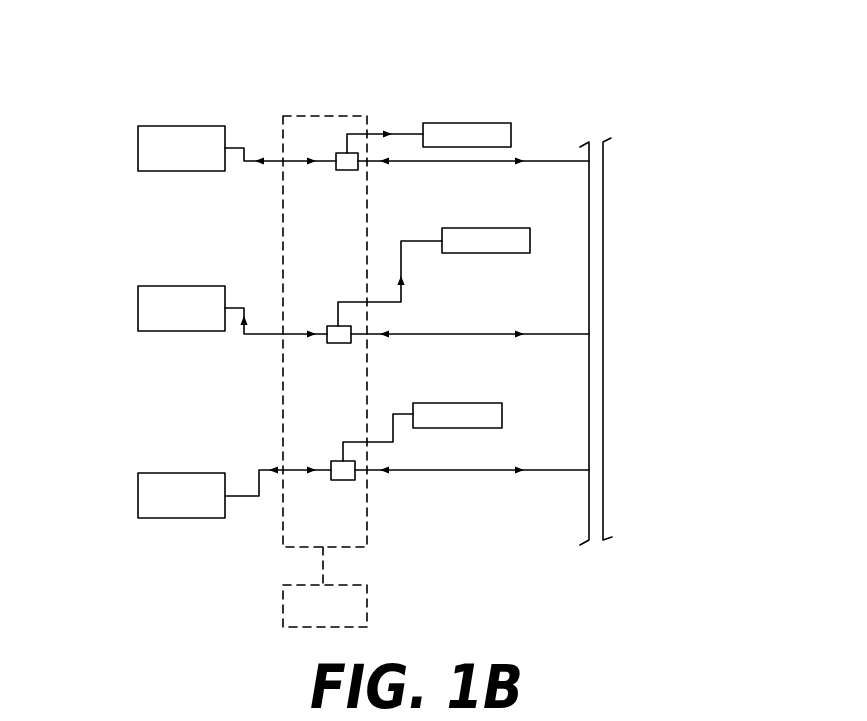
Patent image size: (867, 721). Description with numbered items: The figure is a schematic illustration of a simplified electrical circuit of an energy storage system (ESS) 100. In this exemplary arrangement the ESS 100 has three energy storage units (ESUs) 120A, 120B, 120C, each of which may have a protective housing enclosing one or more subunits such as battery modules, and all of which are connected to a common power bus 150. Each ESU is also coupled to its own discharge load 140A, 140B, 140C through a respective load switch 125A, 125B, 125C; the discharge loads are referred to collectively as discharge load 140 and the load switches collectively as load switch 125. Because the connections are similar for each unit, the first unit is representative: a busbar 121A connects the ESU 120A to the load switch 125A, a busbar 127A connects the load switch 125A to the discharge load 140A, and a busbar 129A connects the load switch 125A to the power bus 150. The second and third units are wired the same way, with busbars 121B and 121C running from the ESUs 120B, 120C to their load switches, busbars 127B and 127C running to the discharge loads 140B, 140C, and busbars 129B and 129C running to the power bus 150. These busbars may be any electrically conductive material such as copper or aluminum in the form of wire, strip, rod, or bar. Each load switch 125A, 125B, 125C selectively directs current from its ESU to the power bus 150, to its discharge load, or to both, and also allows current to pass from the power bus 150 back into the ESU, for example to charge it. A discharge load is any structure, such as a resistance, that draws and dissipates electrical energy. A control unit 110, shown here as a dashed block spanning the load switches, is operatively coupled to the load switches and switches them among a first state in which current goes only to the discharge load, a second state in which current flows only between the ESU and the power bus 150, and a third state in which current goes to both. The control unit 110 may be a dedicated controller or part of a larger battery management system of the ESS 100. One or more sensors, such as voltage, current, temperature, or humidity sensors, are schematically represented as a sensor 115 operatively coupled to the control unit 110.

The energy storage system 100 is at (208, 68).
The control unit 110 is at (367, 518).
The sensor 115 is at (367, 606).
The energy storage unit 120A is at (152, 149).
The energy storage unit 120B is at (152, 309).
The energy storage unit 120C is at (152, 498).
The busbar 121A is at (243, 145).
The busbar 121B is at (236, 306).
The busbar 121C is at (245, 494).
The load switch 125 is at (332, 118).
The load switch 125A is at (345, 171).
The load switch 125B is at (338, 344).
The load switch 125C is at (343, 481).
The busbar 127A is at (404, 133).
The busbar 127B is at (410, 240).
The busbar 127C is at (399, 413).
The busbar 129A is at (551, 160).
The busbar 129B is at (551, 333).
The busbar 129C is at (562, 469).
The discharge load 140 is at (452, 62).
The discharge load 140A is at (493, 122).
The discharge load 140B is at (494, 227).
The discharge load 140C is at (470, 402).
The power bus 150 is at (603, 366).